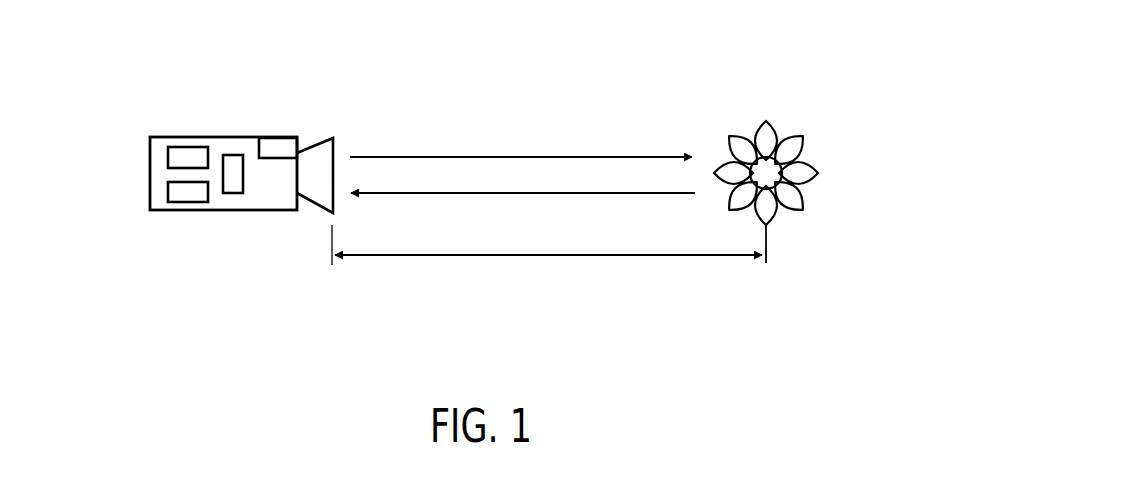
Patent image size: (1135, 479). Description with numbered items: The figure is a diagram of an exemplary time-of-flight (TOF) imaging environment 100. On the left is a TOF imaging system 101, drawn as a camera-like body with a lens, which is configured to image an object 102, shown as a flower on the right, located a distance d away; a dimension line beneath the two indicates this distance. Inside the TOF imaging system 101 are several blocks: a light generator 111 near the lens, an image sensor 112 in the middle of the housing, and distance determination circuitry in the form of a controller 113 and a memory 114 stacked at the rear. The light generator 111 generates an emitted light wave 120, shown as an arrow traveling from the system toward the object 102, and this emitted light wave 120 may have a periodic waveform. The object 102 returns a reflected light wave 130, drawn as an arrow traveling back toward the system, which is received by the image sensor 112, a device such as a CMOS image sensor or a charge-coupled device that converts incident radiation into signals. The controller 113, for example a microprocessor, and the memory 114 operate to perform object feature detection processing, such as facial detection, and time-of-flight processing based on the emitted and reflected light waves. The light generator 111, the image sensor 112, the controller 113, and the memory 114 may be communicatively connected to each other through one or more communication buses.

The time-of-flight imaging environment 100 is at (882, 63).
The TOF imaging system 101 is at (150, 180).
The object 102 is at (805, 162).
The light generator 111 is at (278, 140).
The image sensor 112 is at (243, 173).
The controller 113 is at (168, 152).
The memory 114 is at (187, 202).
The emitted light wave 120 is at (483, 157).
The reflected light wave 130 is at (602, 193).